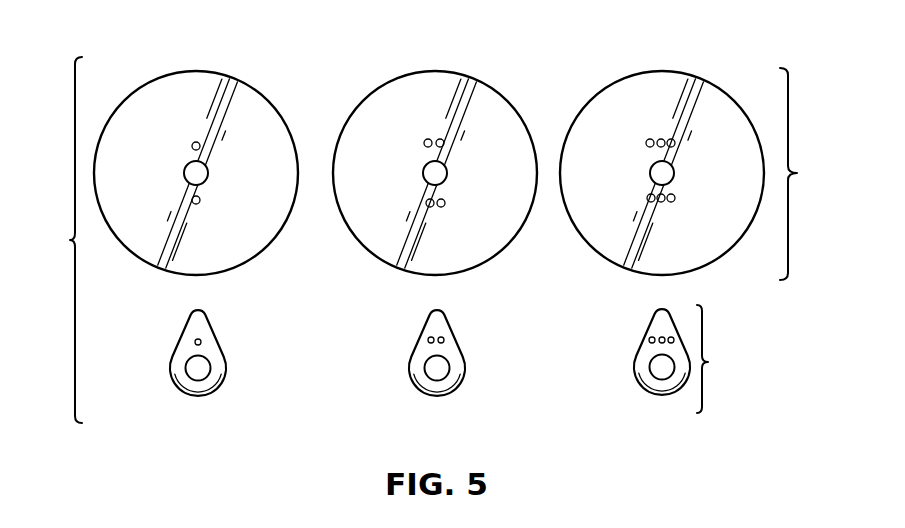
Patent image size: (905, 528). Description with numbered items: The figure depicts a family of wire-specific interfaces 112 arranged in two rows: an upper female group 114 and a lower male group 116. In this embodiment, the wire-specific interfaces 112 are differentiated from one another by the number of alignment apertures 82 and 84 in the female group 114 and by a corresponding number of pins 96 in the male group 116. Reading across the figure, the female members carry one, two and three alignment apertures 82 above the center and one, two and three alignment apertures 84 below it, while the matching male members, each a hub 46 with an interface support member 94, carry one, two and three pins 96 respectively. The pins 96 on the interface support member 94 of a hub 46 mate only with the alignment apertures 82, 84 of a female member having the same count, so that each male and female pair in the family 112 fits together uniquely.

The hub 46 is at (199, 381).
The alignment aperture 82 is at (196, 141).
The alignment aperture 84 is at (196, 204).
The interface support member 94 is at (174, 379).
The pin 96 is at (197, 338).
The wire-specific interfaces 112 is at (69, 240).
The female group 114 is at (798, 173).
The male group 116 is at (709, 362).